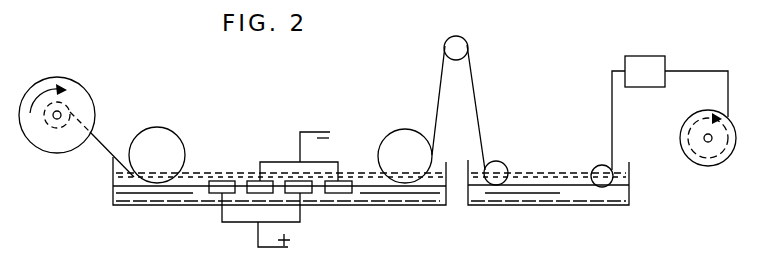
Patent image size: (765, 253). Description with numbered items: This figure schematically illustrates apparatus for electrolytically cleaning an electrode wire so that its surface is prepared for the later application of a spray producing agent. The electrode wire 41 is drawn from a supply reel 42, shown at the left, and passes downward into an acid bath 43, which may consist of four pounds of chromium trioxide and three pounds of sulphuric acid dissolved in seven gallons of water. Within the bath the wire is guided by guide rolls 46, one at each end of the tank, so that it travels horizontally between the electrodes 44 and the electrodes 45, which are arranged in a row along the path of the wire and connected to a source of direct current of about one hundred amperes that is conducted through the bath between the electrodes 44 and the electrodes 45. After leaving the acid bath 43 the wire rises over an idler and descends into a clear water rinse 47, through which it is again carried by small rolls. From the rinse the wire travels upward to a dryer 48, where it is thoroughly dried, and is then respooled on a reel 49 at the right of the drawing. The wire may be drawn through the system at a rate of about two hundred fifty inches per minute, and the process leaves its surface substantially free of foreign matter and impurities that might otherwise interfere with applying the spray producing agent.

The electrode wire 41 is at (99, 134).
The supply reel 42 is at (53, 74).
The acid bath 43 is at (136, 201).
The electrodes 44 is at (217, 181).
The electrodes 45 is at (252, 181).
The guide rolls 46 is at (163, 133).
The clear water rinse 47 is at (582, 205).
The dryer 48 is at (652, 60).
The reel 49 is at (712, 167).